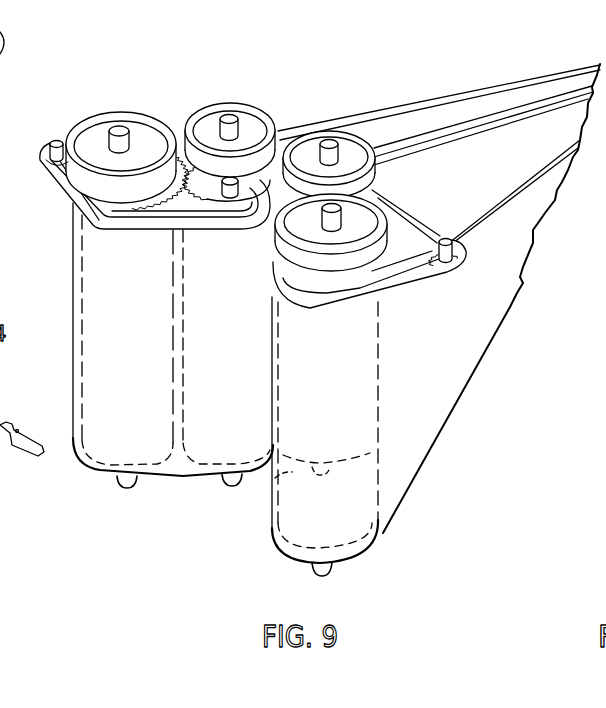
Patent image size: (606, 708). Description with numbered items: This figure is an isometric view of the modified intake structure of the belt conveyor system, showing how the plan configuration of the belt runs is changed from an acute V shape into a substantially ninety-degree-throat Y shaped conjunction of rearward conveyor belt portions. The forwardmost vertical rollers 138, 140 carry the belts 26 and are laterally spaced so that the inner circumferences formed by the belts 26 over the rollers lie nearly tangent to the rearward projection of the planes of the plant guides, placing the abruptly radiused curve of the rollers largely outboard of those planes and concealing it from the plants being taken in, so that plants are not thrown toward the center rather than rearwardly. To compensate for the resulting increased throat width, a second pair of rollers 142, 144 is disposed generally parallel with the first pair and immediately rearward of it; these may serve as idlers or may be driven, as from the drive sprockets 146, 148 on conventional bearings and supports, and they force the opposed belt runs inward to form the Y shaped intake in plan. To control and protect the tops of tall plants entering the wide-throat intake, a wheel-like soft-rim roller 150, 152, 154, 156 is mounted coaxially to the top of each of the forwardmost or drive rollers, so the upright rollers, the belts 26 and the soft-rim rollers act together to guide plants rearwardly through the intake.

The belts 26 is at (432, 422).
The forwardmost vertical roller 138 is at (108, 432).
The forwardmost vertical roller 140 is at (360, 512).
The second pair roller 142 is at (213, 425).
The second pair roller 144 is at (288, 472).
The drive sprocket 146 is at (56, 143).
The drive sprocket 148 is at (453, 253).
The soft-rim roller 150 is at (105, 123).
The soft-rim roller 152 is at (367, 217).
The soft-rim roller 154 is at (247, 122).
The soft-rim roller 156 is at (308, 148).